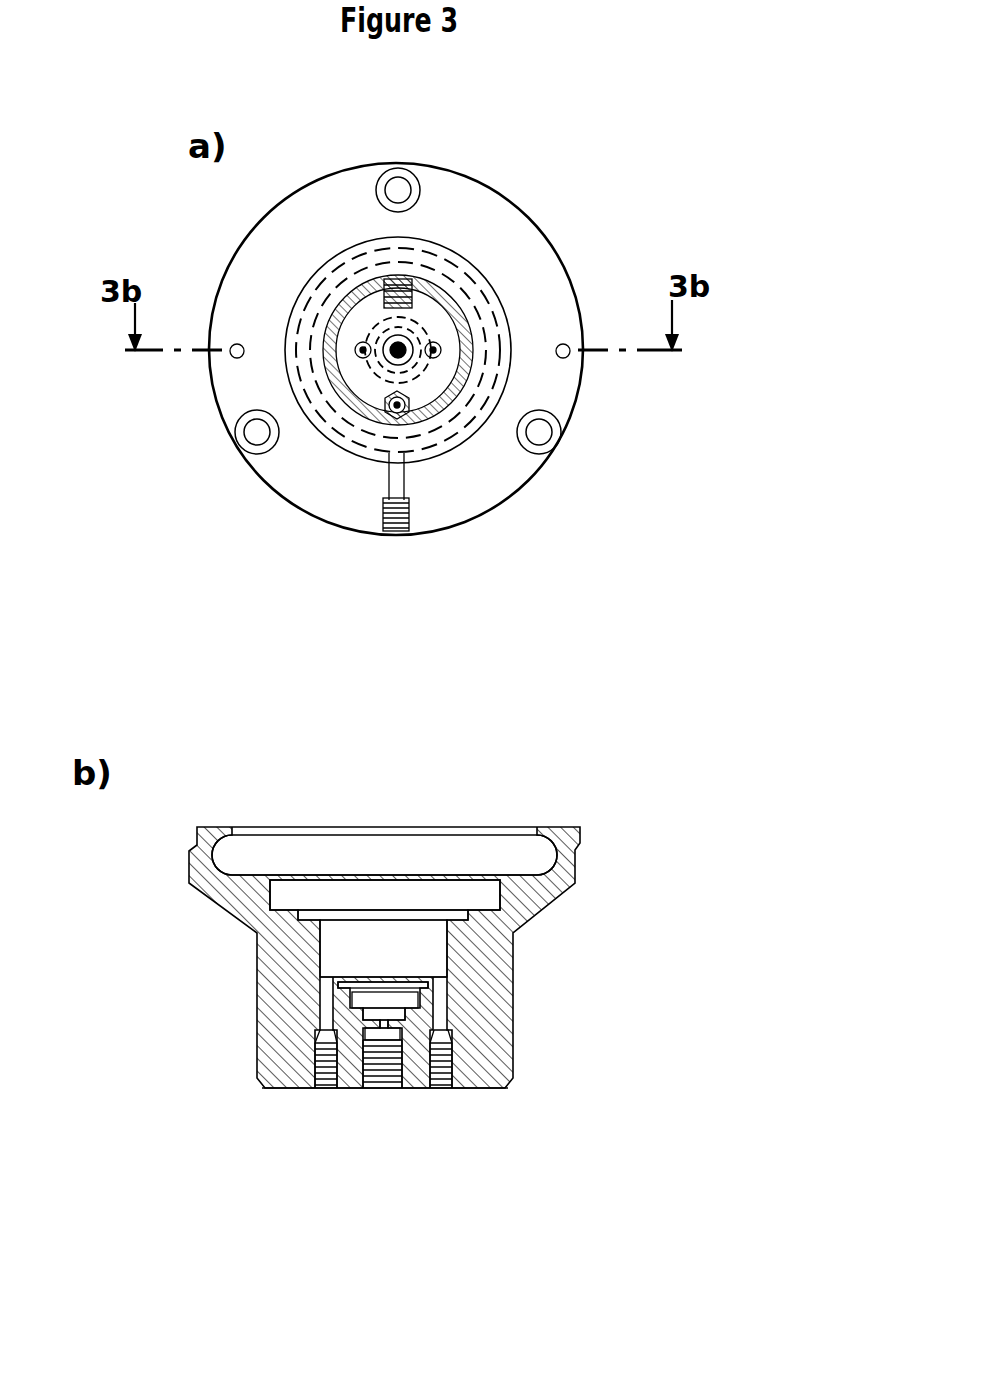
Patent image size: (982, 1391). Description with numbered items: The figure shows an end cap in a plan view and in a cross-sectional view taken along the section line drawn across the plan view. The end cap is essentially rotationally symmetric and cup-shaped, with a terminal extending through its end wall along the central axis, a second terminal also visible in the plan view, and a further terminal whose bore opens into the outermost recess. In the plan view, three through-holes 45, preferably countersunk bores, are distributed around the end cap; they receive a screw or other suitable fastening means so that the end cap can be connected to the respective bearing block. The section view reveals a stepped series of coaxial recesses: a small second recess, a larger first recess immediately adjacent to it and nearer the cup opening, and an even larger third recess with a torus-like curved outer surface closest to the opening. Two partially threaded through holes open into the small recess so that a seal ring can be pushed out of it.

The through-holes 45 is at (398, 188).